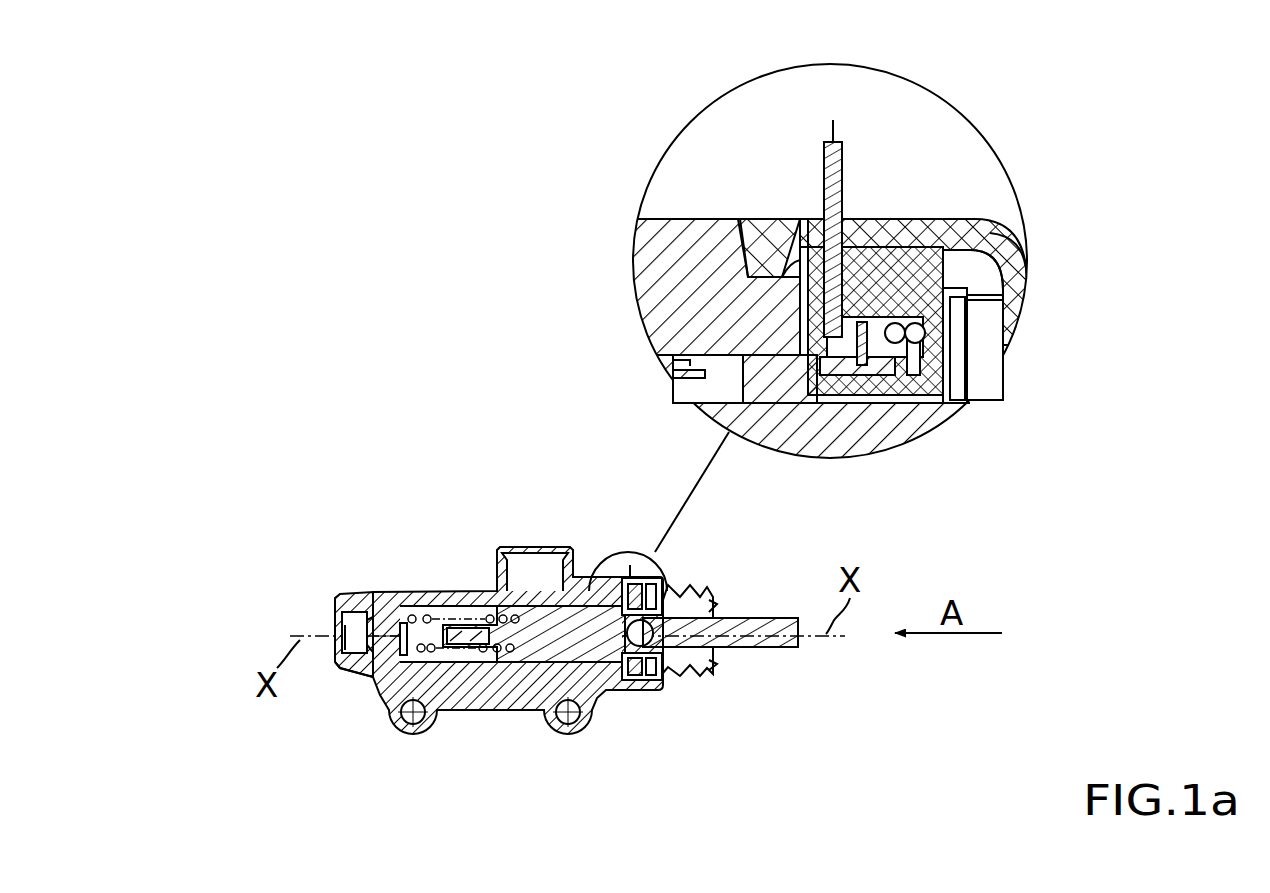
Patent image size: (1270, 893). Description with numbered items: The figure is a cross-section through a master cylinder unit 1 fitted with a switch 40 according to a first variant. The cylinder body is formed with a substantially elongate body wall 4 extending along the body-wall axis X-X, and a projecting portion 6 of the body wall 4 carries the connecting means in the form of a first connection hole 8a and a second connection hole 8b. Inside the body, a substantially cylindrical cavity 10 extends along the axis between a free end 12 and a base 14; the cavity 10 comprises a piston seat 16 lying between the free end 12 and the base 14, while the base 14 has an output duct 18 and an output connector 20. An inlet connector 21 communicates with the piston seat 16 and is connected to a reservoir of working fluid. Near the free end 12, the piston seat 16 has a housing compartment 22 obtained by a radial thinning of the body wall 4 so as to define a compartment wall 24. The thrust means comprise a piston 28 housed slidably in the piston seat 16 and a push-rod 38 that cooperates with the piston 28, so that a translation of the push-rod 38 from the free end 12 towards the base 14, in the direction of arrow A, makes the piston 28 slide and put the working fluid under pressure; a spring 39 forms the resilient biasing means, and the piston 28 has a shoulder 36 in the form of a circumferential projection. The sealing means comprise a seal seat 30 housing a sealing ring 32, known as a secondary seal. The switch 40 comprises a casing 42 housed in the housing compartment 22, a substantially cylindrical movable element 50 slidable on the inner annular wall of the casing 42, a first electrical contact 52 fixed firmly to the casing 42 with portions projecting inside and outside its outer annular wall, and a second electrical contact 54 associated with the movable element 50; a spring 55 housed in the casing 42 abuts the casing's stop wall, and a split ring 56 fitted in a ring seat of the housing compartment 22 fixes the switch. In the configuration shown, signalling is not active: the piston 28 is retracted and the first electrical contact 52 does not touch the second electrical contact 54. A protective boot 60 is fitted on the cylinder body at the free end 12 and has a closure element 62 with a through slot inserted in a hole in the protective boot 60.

The master cylinder unit 1 is at (322, 536).
The body wall 4 is at (457, 591).
The projecting portion 6 is at (490, 710).
The first connection hole 8a is at (415, 733).
The second connection hole 8b is at (568, 733).
The cavity 10 is at (440, 610).
The free end 12 is at (692, 683).
The base 14 is at (320, 610).
The piston seat 16 is at (422, 620).
The output duct 18 is at (383, 627).
The output connector 20 is at (357, 668).
The inlet connector 21 is at (507, 540).
The housing compartment 22 is at (812, 215).
The compartment wall 24 is at (642, 690).
The piston 28 is at (548, 593).
The seal seat 30 is at (703, 413).
The sealing ring 32 is at (787, 360).
The shoulder 36 is at (863, 347).
The push-rod 38 is at (800, 650).
The spring 39 is at (510, 655).
The switch 40 is at (1027, 250).
The casing 42 is at (965, 228).
The movable element 50 is at (925, 412).
The first electrical contact 52 is at (848, 181).
The second electrical contact 54 is at (875, 327).
The spring 55 is at (917, 340).
The split ring 56 is at (950, 327).
The protective boot 60 is at (950, 270).
The closure element 62 is at (820, 217).